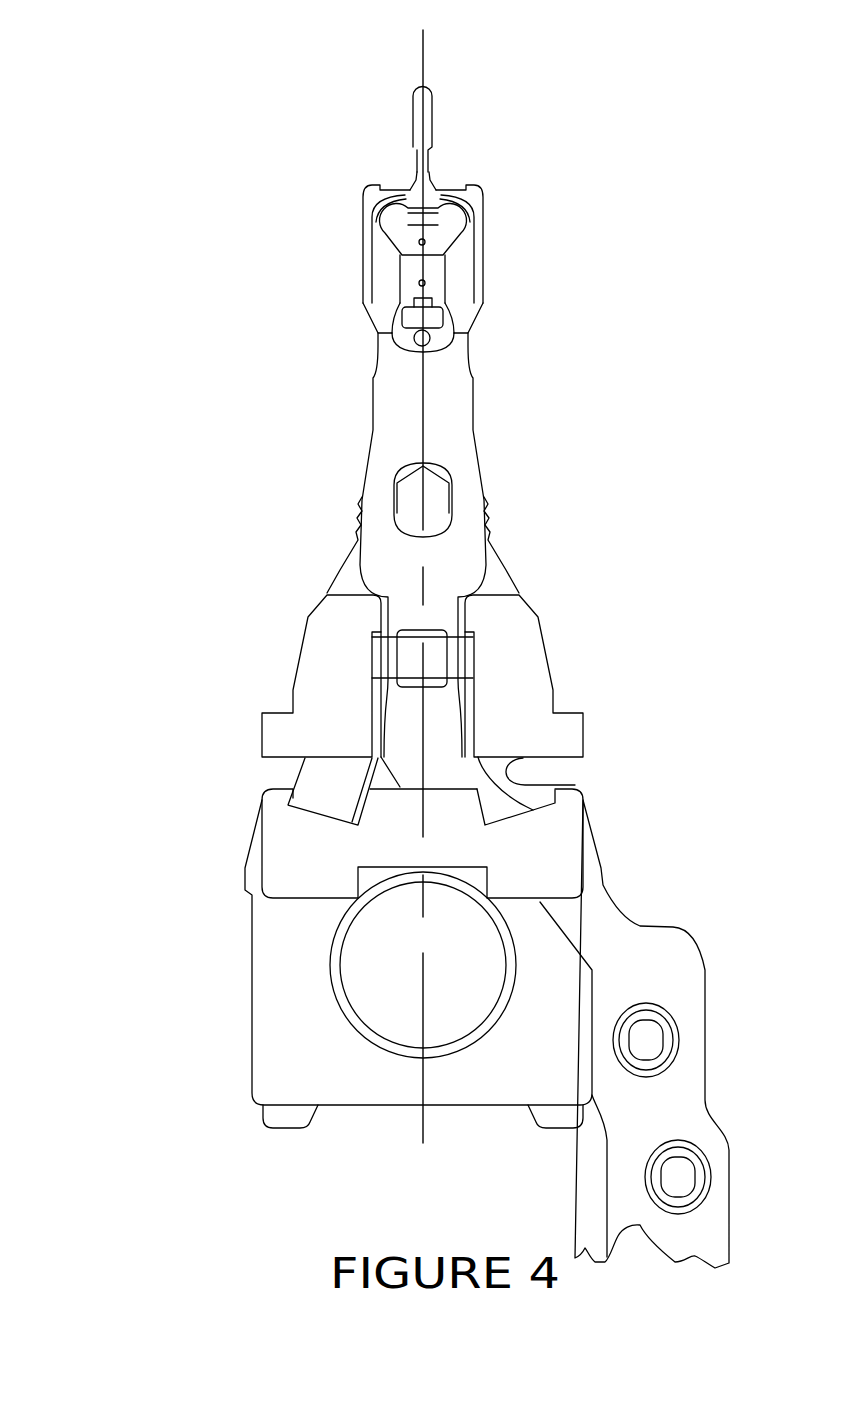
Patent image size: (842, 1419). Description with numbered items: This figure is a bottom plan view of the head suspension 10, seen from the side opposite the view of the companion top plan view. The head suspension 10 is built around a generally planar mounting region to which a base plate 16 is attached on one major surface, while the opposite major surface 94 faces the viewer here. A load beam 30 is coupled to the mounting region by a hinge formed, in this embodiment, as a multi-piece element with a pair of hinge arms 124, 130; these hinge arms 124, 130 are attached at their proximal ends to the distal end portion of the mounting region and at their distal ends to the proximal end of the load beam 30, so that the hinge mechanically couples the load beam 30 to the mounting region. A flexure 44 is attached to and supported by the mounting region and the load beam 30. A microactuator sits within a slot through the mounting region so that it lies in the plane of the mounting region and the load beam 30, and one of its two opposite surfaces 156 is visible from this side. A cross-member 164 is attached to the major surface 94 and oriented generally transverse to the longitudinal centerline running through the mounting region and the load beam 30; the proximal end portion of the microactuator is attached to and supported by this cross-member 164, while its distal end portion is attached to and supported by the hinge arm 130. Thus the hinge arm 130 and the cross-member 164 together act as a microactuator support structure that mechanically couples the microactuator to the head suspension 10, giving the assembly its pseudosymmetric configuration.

The head suspension 10 is at (187, 1215).
The base plate 16 is at (369, 1107).
The load beam 30 is at (345, 568).
The flexure 44 is at (465, 473).
The major surface 94 is at (272, 1050).
The hinge arm 124 is at (528, 690).
The hinge arm 130 is at (303, 640).
The surface 156 is at (313, 772).
The cross-member 164 is at (573, 842).